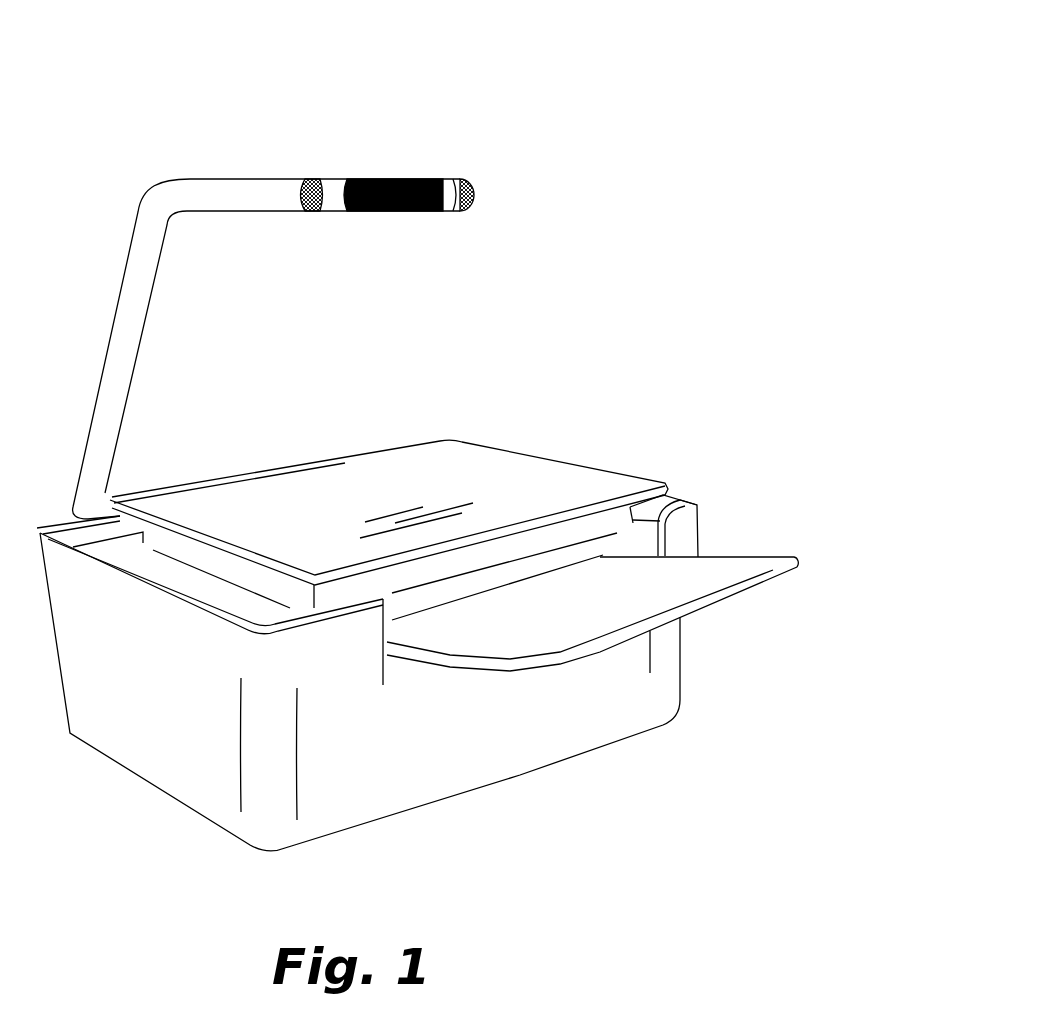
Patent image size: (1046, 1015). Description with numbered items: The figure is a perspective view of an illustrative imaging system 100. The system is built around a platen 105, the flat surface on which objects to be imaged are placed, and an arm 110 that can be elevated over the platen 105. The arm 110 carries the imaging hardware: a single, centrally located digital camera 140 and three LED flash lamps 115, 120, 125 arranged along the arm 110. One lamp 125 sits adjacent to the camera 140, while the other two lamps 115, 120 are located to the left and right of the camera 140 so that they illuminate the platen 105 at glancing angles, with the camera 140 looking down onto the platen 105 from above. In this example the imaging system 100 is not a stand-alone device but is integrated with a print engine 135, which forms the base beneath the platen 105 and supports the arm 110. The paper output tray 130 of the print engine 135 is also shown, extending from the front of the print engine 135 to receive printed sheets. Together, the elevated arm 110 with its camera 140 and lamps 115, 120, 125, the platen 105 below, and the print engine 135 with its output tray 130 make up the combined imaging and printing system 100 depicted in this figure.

The imaging system 100 is at (623, 83).
The platen 105 is at (397, 456).
The arm 110 is at (117, 307).
The LED flash lamp 115 is at (302, 213).
The LED flash lamp 120 is at (472, 214).
The LED flash lamp 125 is at (366, 213).
The paper output tray 130 is at (720, 558).
The print engine 135 is at (677, 678).
The digital camera 140 is at (391, 213).